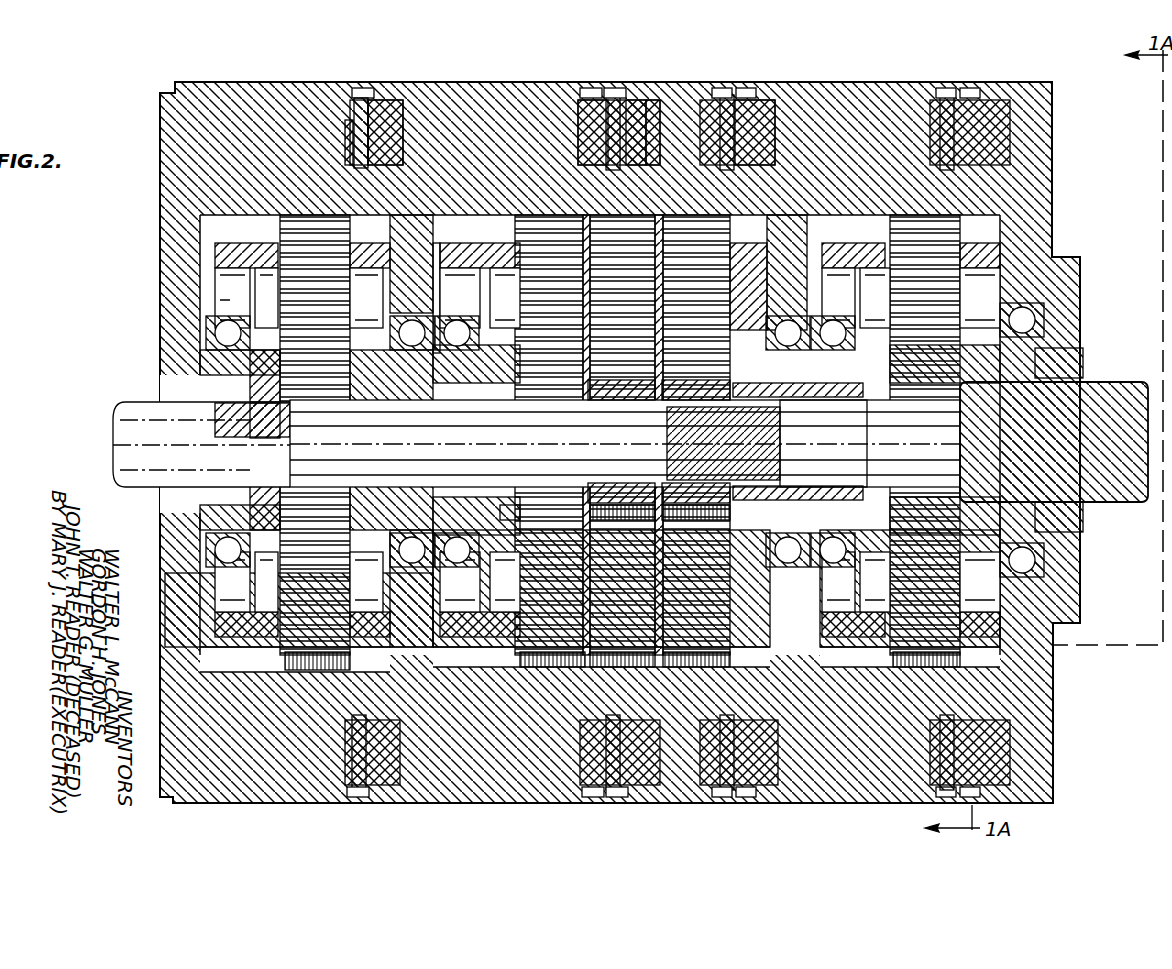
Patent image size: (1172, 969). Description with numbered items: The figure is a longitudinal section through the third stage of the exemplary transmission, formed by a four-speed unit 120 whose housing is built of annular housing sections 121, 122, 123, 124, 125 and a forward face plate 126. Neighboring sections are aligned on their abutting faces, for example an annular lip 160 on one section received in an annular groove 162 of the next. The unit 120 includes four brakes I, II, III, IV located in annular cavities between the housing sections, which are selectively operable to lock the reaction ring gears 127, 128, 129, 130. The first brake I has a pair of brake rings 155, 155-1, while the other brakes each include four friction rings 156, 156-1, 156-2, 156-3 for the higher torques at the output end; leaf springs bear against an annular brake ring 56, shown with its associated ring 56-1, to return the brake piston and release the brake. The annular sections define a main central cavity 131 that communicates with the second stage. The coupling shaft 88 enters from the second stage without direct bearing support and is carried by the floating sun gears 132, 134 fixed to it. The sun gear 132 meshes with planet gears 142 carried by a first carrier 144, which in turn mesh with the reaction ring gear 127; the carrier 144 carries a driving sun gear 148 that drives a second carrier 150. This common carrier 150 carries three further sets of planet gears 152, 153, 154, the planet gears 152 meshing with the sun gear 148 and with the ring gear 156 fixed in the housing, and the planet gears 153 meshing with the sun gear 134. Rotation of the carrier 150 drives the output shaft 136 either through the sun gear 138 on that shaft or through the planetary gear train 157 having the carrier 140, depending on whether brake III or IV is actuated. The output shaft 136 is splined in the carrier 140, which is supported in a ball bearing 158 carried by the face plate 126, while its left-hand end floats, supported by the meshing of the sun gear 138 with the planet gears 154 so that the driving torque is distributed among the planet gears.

The four-speed unit 120 is at (140, 275).
The coupling shaft 88 is at (134, 400).
The output shaft 136 is at (1135, 395).
The planet gears 142 is at (298, 245).
The planet gears 152 is at (538, 252).
The planet gears 153 is at (640, 310).
The planet gears 154 is at (720, 265).
The planetary gear train 157 is at (868, 433).
The main central cavity 131 is at (472, 225).
The sun gear 132 is at (280, 508).
The driving sun gear 148 is at (522, 514).
The sun gear 134 is at (618, 522).
The sun gear 138 is at (696, 522).
The second carrier 150 is at (632, 606).
The carrier 140 is at (937, 606).
The first carrier 144 is at (232, 608).
The ball bearing 158 is at (1040, 562).
The reaction ring gear 127 is at (287, 660).
The ring gear 128 is at (630, 655).
The reaction ring gear 129 is at (728, 658).
The reaction ring gear 130 is at (895, 658).
The housing section 121 is at (250, 800).
The housing section 122 is at (430, 800).
The housing section 123 is at (547, 800).
The housing section 124 is at (662, 800).
The housing section 125 is at (867, 798).
The forward face plate 126 is at (1045, 782).
The brake ring 155 is at (358, 118).
The brake ring 155-1 is at (346, 125).
The annular lip 160 is at (364, 90).
The annular groove 162 is at (382, 95).
The ring gear 156 is at (616, 105).
The friction ring 156-1 is at (634, 110).
The friction ring 156-2 is at (652, 120).
The friction ring 156-3 is at (765, 108).
The annular brake ring 56 is at (968, 765).
The bolt shank 56-1 is at (945, 800).
The first brake I is at (388, 118).
The second brake II is at (590, 100).
The third brake III is at (770, 100).
The fourth brake IV is at (990, 115).